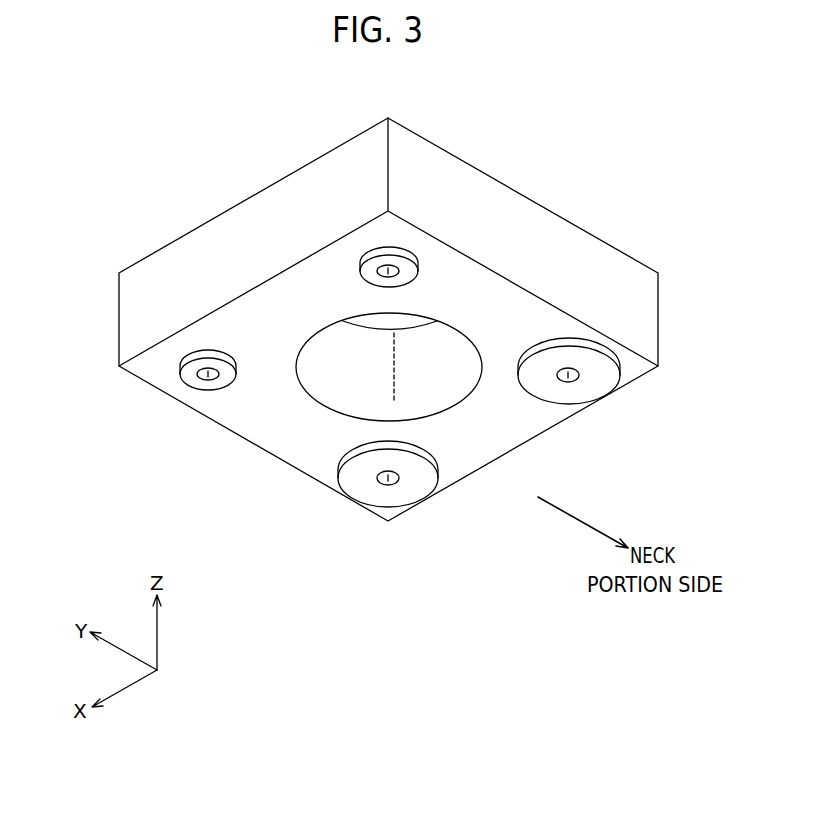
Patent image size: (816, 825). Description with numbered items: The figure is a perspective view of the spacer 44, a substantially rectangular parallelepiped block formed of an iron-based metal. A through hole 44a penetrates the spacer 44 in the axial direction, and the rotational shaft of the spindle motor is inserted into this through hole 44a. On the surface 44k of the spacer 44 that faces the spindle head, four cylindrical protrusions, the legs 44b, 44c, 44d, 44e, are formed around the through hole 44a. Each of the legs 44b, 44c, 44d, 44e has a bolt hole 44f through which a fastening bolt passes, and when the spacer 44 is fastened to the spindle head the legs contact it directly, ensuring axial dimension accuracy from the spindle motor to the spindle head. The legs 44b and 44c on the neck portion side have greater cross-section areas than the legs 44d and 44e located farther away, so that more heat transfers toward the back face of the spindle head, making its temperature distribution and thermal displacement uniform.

The spacer 44 is at (526, 160).
The through hole 44a is at (342, 388).
The leg 44b is at (348, 480).
The leg 44c is at (600, 385).
The leg 44d is at (180, 375).
The leg 44e is at (398, 262).
The bolt hole 44f is at (377, 272).
The surface 44k is at (495, 305).